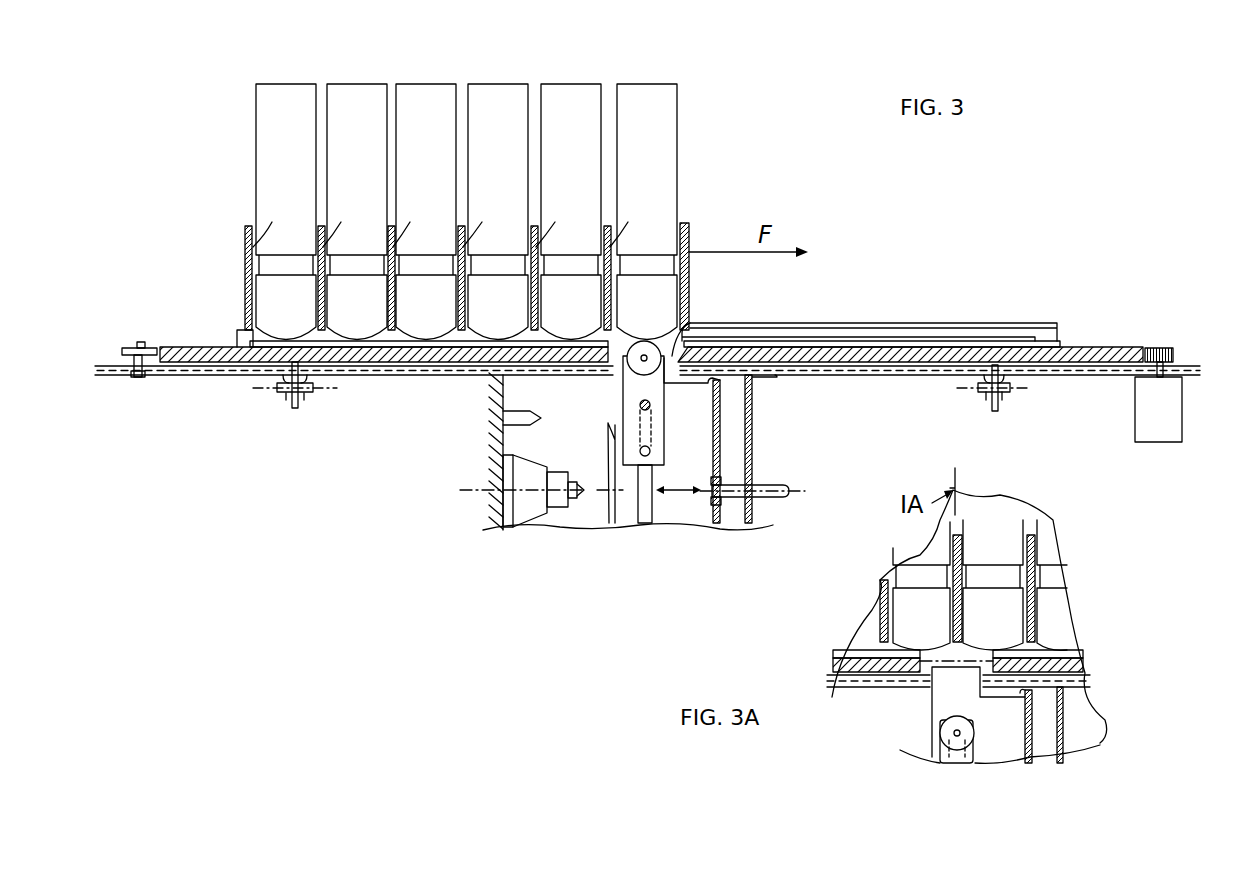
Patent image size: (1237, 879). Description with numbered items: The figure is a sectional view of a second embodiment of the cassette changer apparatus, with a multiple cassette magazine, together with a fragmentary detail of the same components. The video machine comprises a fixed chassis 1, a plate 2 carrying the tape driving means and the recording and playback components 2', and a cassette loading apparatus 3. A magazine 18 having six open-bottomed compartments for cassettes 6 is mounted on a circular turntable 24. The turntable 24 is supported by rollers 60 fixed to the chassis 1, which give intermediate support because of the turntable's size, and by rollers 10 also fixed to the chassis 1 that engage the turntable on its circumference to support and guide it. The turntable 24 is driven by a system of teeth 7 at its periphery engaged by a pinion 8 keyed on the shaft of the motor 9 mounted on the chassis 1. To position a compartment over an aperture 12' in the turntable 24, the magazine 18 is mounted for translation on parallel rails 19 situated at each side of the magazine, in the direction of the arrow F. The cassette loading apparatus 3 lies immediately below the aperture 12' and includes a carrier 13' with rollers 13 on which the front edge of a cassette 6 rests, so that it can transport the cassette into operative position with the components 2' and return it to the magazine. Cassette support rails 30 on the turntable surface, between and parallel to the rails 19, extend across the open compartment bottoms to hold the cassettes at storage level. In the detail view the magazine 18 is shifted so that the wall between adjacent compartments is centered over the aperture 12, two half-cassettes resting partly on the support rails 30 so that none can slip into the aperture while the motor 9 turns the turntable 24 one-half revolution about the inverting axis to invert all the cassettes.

In FIG. 3, the fixed chassis 1 is at (198, 371).
In FIG. 3A, the fixed chassis 1 is at (860, 686).
In FIG. 3, the plate 2 is at (594, 466).
In FIG. 3, the recording and playback components 2' is at (541, 512).
In FIG. 3, the cassette loading apparatus 3 is at (692, 448).
In FIG. 3A, the cassette loading apparatus 3 is at (1014, 743).
In FIG. 3, the cassette 6 is at (667, 127).
In FIG. 3A, the cassette 6 is at (990, 530).
In FIG. 3, the system of teeth 7 is at (1142, 348).
In FIG. 3, the pinion 8 is at (1173, 360).
In FIG. 3, the motor 9 is at (1160, 432).
In FIG. 3, the rollers 10 is at (128, 347).
In FIG. 3A, the aperture 12 is at (922, 726).
In FIG. 3, the aperture in the turntable 12' is at (709, 332).
In FIG. 3A, the aperture in the turntable 12' is at (940, 712).
In FIG. 3, the rollers 13 is at (619, 380).
In FIG. 3A, the rollers 13 is at (980, 735).
In FIG. 3, the carrier 13' is at (662, 439).
In FIG. 3, the magazine 18 is at (246, 268).
In FIG. 3A, the magazine 18 is at (1031, 551).
In FIG. 3, the parallel rails 19 is at (942, 332).
In FIG. 3, the circular turntable 24 is at (1100, 353).
In FIG. 3A, the circular turntable 24 is at (1082, 665).
In FIG. 3, the cassette support rails 30 is at (393, 344).
In FIG. 3A, the cassette support rails 30 is at (1070, 655).
In FIG. 3, the rollers 60 is at (295, 408).